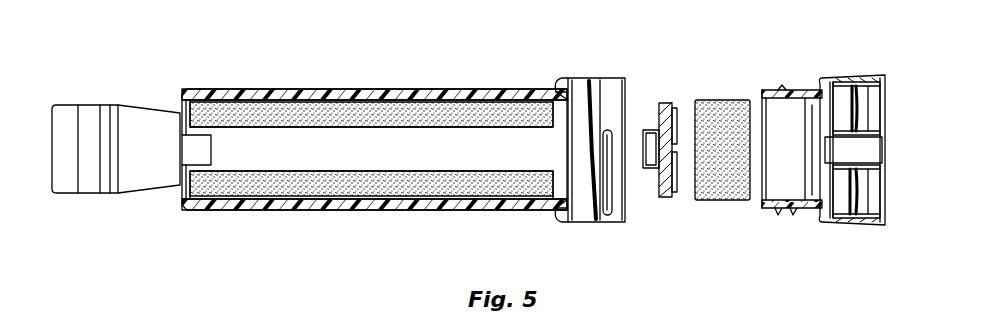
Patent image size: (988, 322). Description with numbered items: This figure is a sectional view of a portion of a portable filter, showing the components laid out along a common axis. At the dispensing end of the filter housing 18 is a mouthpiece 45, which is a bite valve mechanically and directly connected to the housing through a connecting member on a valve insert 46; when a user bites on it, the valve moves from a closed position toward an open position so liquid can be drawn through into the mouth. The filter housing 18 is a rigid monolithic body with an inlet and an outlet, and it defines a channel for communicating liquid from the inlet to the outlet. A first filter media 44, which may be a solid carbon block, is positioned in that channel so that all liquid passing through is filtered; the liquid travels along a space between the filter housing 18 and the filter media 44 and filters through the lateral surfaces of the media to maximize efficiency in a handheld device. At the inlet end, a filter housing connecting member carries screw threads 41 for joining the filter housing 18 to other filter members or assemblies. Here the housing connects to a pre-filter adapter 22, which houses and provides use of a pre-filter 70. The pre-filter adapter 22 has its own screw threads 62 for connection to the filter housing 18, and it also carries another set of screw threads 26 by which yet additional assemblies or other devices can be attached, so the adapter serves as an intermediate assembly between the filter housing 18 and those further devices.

The mouthpiece 45 is at (55, 107).
The first filter media 44 is at (225, 115).
The filter housing 18 is at (310, 90).
The screw threads 41 is at (606, 95).
The valve insert 46 is at (665, 103).
The pre-filter 70 is at (720, 110).
The screw threads 62 is at (797, 88).
The pre-filter adapter 22 is at (873, 144).
The screw threads 26 is at (870, 196).